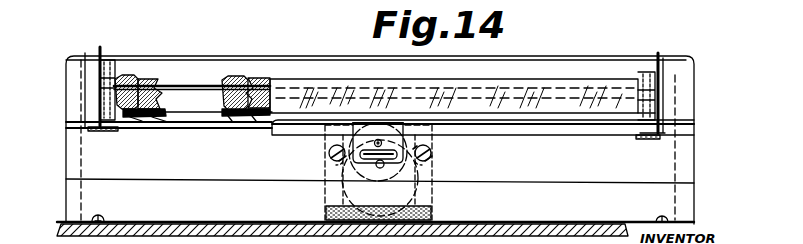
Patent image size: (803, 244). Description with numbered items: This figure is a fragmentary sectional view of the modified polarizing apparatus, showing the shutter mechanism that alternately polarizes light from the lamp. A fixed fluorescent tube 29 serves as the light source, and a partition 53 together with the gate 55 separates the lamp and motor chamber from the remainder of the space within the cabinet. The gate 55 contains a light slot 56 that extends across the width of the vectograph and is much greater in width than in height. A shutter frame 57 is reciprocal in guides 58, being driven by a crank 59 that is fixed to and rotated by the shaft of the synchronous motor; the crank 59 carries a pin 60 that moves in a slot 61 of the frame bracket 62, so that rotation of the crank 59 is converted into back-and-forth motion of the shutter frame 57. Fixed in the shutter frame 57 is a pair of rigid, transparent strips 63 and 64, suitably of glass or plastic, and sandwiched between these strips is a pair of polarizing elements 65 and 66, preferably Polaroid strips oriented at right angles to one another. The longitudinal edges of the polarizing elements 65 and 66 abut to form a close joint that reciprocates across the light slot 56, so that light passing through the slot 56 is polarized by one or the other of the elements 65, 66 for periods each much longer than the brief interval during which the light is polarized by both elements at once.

The fluorescent tube 29 is at (548, 84).
The partition 53 is at (642, 211).
The gate 55 is at (117, 56).
The light slot 56 is at (175, 86).
The shutter frame 57 is at (108, 128).
The guides 58 is at (643, 140).
The crank 59 is at (383, 167).
The pin 60 is at (400, 158).
The slot 61 is at (431, 153).
The frame bracket 62 is at (357, 137).
The transparent strip 63 is at (302, 80).
The transparent strip 64 is at (160, 116).
The polarizing element 65 is at (140, 79).
The polarizing element 66 is at (142, 120).